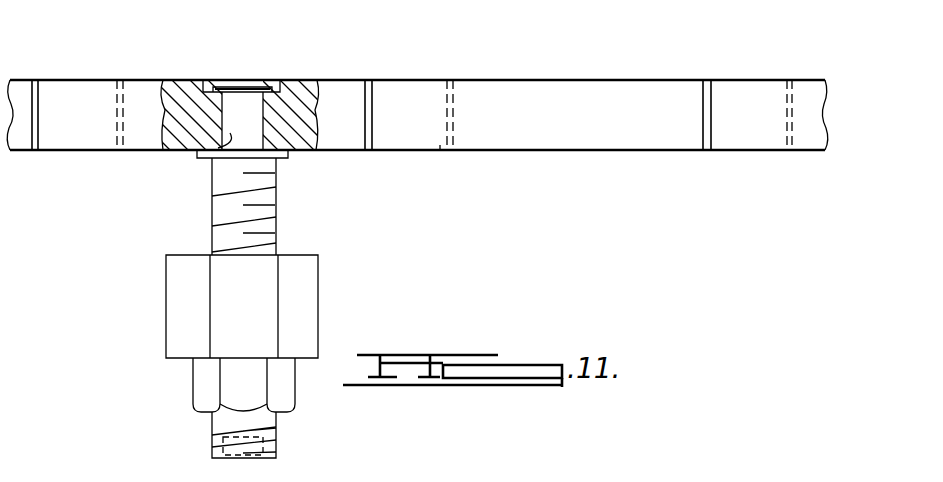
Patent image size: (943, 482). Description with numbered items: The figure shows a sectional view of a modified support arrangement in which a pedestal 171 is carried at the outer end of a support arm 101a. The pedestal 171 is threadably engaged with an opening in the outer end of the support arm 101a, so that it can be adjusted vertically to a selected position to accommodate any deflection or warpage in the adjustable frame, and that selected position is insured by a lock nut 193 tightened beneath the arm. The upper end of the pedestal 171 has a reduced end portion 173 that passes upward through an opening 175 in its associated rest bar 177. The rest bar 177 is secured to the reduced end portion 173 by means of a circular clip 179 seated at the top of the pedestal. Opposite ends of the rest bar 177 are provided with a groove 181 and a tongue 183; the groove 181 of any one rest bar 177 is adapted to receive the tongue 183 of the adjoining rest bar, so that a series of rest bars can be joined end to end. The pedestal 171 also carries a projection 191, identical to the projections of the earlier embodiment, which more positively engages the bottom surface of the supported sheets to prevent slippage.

The rest bar 177 is at (77, 95).
The projection 191 is at (241, 82).
The circular clip 179 is at (270, 82).
The tongue 183 is at (456, 102).
The groove 181 is at (437, 145).
The opening 175 is at (214, 157).
The reduced end portion 173 is at (252, 113).
The pedestal 171 is at (263, 212).
The support arm 101a is at (308, 268).
The lock nut 193 is at (207, 378).